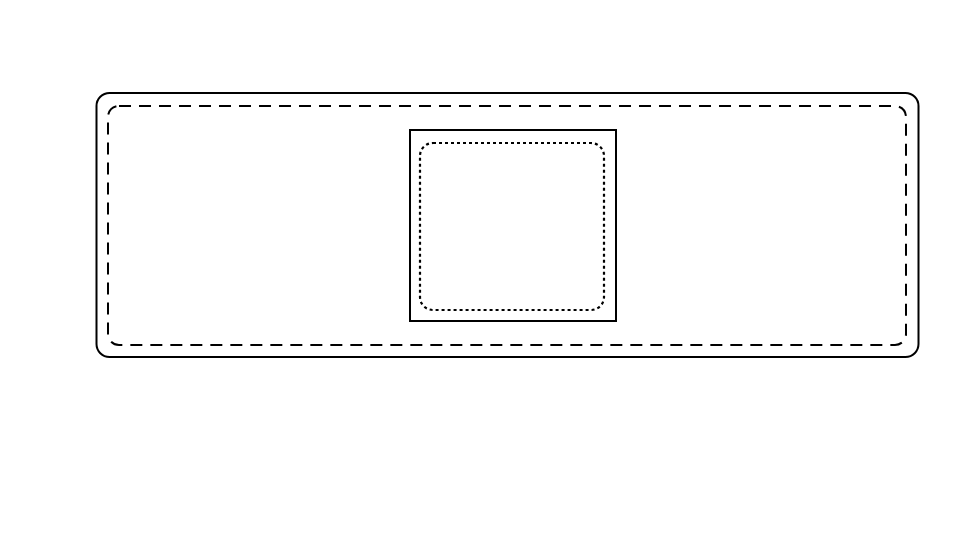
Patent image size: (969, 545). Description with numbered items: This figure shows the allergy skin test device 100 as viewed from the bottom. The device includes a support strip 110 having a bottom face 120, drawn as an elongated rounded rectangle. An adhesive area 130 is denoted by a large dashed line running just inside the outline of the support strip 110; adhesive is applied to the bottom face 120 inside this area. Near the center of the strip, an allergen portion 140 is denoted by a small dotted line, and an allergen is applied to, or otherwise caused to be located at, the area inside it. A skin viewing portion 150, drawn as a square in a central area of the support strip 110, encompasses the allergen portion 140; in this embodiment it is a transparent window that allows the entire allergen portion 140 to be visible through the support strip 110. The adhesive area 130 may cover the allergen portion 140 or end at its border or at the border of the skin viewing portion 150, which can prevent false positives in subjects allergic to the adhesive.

The allergy skin test device 100 is at (152, 69).
The support strip 110 is at (96, 207).
The bottom face 120 is at (483, 279).
The adhesive area 130 is at (227, 290).
The allergen portion 140 is at (555, 310).
The skin viewing portion 150 is at (472, 321).